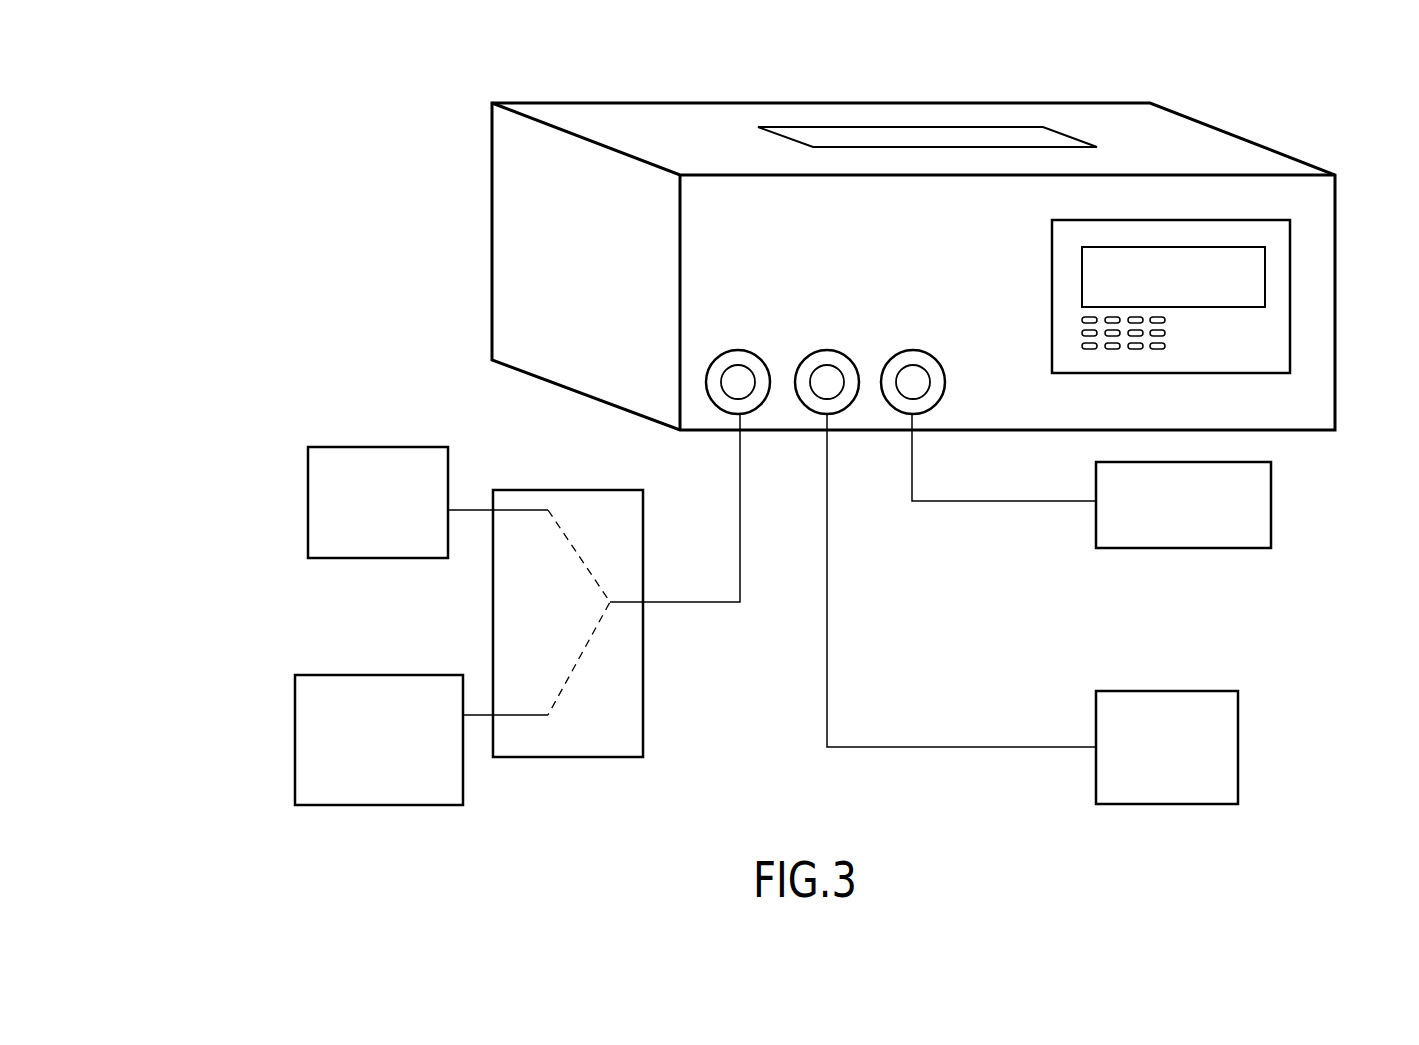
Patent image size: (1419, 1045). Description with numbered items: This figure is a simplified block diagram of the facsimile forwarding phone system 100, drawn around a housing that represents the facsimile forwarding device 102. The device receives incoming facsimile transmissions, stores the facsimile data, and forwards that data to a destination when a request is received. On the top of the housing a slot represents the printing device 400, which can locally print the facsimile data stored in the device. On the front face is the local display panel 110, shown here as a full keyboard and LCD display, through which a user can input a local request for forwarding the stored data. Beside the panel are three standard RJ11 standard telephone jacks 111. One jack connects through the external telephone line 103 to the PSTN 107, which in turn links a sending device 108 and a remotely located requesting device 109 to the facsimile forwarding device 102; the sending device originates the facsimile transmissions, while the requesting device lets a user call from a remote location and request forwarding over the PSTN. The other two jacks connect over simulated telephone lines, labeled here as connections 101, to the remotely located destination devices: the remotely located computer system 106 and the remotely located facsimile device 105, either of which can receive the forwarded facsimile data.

The facsimile forwarding phone system 100 is at (286, 95).
The facsimile forwarding device 102 is at (500, 254).
The printing device 400 is at (977, 138).
The local display panel 110 is at (1258, 343).
The RJ11 standard telephone jacks 111 is at (735, 349).
The PSTN 107 is at (570, 758).
The external telephone line 103 is at (697, 603).
The connection cables 101 is at (825, 579).
The sending device 108 is at (308, 502).
The remotely located requesting device 109 is at (295, 742).
The remotely located computer system 106 is at (1185, 549).
The remotely located facsimile device 105 is at (1238, 745).